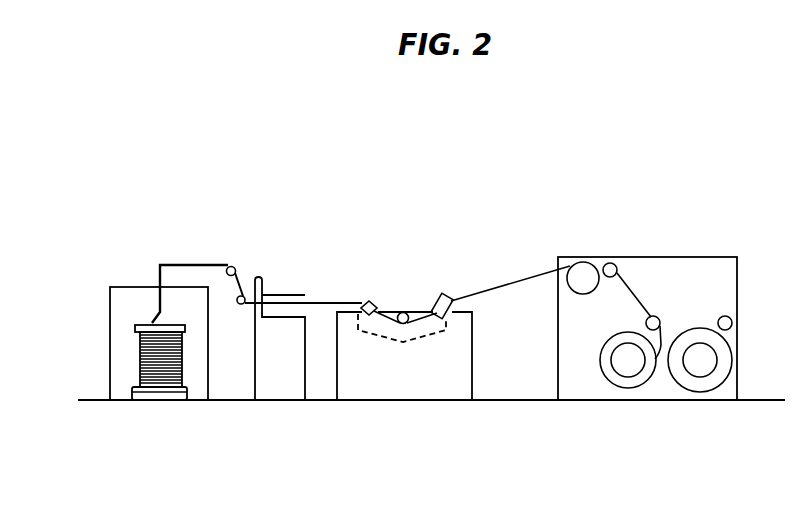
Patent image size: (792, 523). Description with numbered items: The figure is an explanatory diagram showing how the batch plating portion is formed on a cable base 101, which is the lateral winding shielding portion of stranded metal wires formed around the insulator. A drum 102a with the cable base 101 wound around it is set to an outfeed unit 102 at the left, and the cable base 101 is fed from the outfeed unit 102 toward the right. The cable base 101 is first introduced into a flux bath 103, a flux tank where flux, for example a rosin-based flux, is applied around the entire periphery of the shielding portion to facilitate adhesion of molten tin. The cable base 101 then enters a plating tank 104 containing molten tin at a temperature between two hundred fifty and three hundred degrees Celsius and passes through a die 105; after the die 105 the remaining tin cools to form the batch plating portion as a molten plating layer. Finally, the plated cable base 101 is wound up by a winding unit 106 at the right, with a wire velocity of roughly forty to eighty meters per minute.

The cable base 101 is at (215, 263).
The outfeed unit 102 is at (130, 262).
The drum 102a is at (157, 390).
The flux bath 103 is at (288, 288).
The plating tank 104 is at (382, 275).
The die 105 is at (446, 319).
The winding unit 106 is at (663, 245).